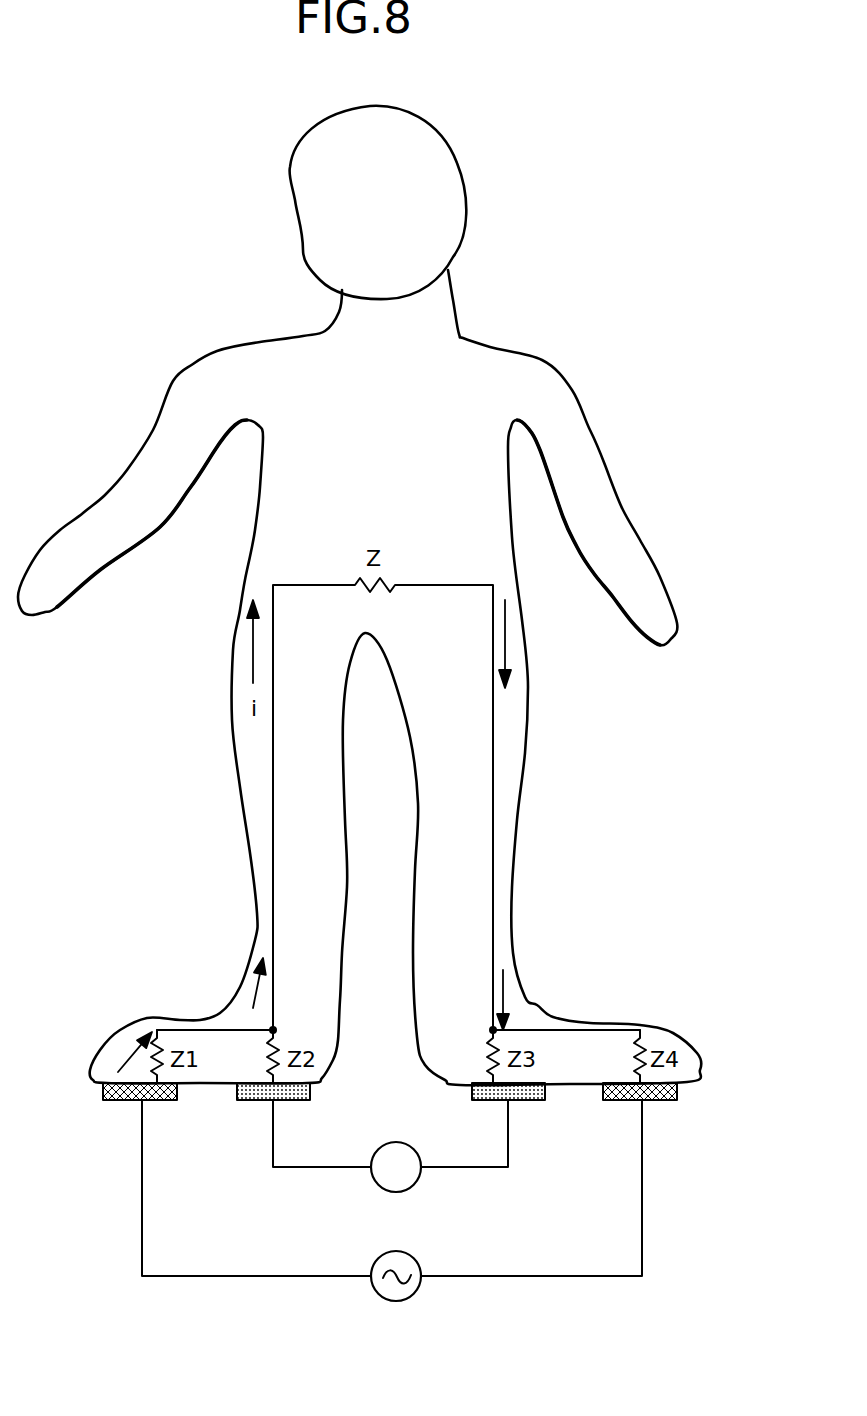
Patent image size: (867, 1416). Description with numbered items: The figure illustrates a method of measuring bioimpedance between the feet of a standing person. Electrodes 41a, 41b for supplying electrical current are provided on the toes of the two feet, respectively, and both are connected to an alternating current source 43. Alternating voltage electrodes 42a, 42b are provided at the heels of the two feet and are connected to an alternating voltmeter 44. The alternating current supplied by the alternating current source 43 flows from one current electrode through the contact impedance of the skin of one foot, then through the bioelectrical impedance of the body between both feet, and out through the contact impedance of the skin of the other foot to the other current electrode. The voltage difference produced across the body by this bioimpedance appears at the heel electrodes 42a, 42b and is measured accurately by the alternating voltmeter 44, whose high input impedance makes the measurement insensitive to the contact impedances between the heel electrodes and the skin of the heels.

The electrode for supplying electrical current 41a is at (177, 1101).
The electrode for supplying electrical current 41b is at (670, 1101).
The alternating voltage electrode 42a is at (297, 1101).
The alternating voltage electrode 42b is at (528, 1101).
The alternating current source 43 is at (415, 1292).
The alternating voltmeter 44 is at (415, 1183).